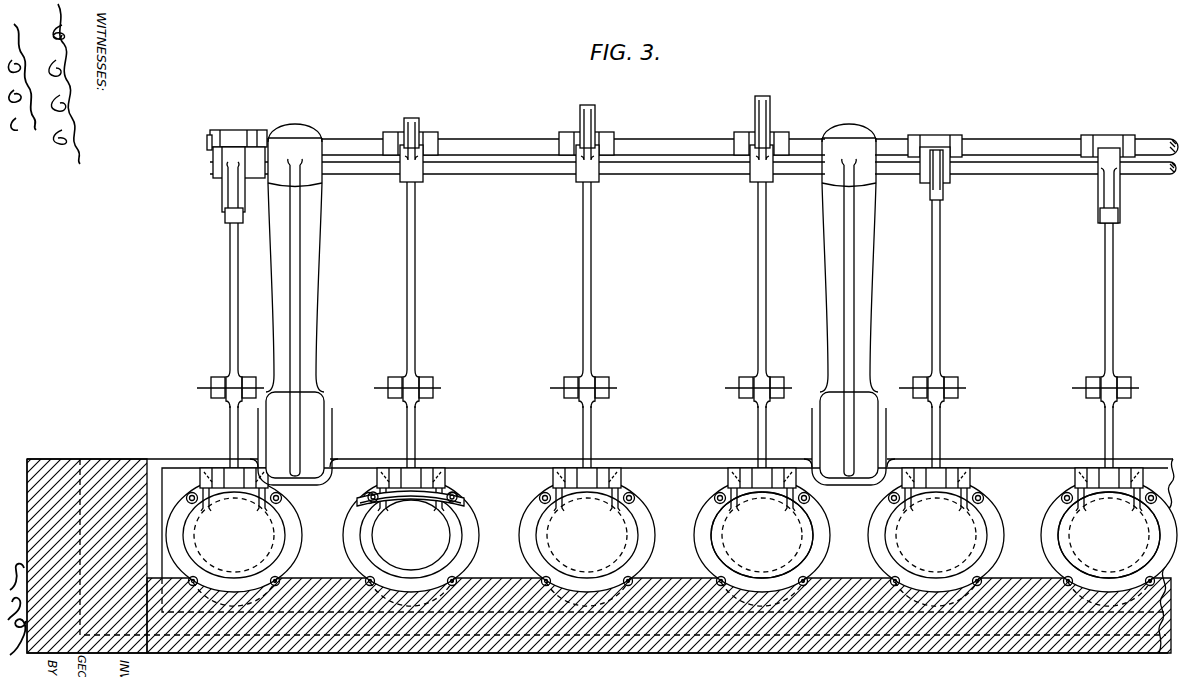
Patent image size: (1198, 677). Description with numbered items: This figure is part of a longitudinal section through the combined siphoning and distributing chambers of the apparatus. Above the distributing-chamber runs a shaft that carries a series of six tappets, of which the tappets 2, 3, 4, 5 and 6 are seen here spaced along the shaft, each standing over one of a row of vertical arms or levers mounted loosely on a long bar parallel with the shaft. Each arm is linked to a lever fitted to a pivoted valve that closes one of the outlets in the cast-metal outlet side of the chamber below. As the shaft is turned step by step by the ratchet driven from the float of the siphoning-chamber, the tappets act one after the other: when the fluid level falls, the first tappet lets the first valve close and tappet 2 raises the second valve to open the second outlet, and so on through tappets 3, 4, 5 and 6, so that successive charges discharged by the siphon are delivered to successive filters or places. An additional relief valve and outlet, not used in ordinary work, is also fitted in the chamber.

The tappet 2 is at (1103, 173).
The tappet 3 is at (937, 190).
The tappet 4 is at (764, 120).
The tappet 5 is at (597, 122).
The tappet 6 is at (420, 126).